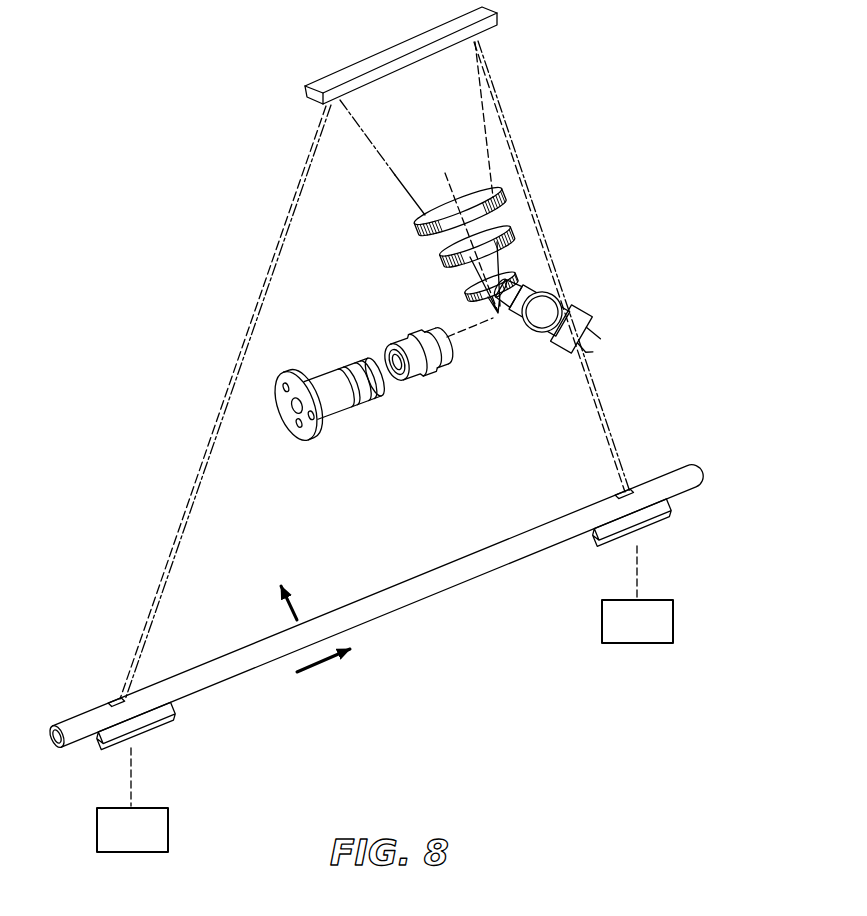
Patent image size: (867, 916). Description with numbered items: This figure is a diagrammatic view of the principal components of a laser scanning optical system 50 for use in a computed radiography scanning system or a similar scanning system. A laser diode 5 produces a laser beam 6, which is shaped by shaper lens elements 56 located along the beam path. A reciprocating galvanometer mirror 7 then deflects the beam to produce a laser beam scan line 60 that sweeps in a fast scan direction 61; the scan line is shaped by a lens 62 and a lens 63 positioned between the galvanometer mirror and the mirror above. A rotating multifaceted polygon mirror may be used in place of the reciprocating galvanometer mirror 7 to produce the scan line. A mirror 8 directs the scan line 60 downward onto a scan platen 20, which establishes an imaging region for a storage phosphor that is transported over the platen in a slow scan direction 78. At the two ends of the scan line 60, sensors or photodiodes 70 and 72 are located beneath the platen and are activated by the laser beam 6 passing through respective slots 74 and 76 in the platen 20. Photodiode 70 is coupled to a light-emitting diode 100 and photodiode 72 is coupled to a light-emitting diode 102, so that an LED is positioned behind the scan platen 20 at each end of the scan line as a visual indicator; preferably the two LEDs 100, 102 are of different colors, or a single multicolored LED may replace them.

The laser diode 5 is at (290, 437).
The laser beam 6 is at (474, 332).
The reciprocating galvonometer mirror 7 is at (588, 304).
The mirror 8 is at (352, 60).
The scan platen 20 is at (660, 472).
The laser scanning optical system 50 is at (106, 250).
The shaper lens elements 56 is at (398, 380).
The laser beam scan line 60 is at (290, 217).
The fast scan direction 61 is at (322, 668).
The lens 62 is at (418, 229).
The lens 63 is at (463, 292).
The photodiode 70 is at (150, 734).
The photodiode 72 is at (652, 524).
The slot 74 is at (113, 700).
The slot 76 is at (622, 490).
The slow scan direction 78 is at (294, 598).
The light-emitting diode 100 is at (170, 828).
The light-emitting diode 102 is at (601, 622).